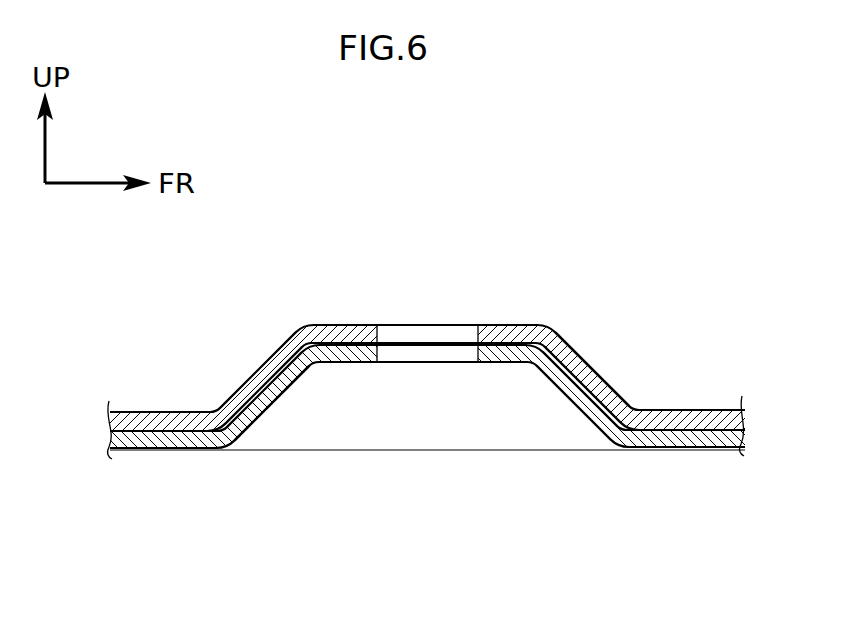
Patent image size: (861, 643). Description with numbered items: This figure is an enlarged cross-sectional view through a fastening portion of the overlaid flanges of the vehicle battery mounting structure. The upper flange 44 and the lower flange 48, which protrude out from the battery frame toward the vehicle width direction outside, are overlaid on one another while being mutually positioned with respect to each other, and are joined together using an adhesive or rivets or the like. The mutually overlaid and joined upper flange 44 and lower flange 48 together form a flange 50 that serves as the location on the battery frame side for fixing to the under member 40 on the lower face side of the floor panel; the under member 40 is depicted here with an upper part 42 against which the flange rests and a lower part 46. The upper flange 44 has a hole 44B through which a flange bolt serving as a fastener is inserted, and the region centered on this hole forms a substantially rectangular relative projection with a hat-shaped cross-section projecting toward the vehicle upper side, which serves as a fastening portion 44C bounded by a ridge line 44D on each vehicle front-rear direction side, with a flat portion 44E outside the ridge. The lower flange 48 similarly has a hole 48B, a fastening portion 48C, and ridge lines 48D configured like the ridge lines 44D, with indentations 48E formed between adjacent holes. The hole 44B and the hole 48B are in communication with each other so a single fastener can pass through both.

The panel 40 is at (442, 431).
The outer panel 42 is at (685, 411).
The inner panel 46 is at (703, 449).
The flange 50 is at (430, 386).
The upper flange 44 is at (430, 328).
The hole 44B is at (400, 325).
The fastening portion 44C is at (505, 325).
The ridge line 44D is at (548, 326).
The flange portion of upper plate 44E is at (143, 410).
The lower flange 48 is at (430, 444).
The hole 48B is at (463, 365).
The fastening portion 48C is at (365, 365).
The ridge line 48D is at (327, 366).
The indentation 48E is at (147, 451).